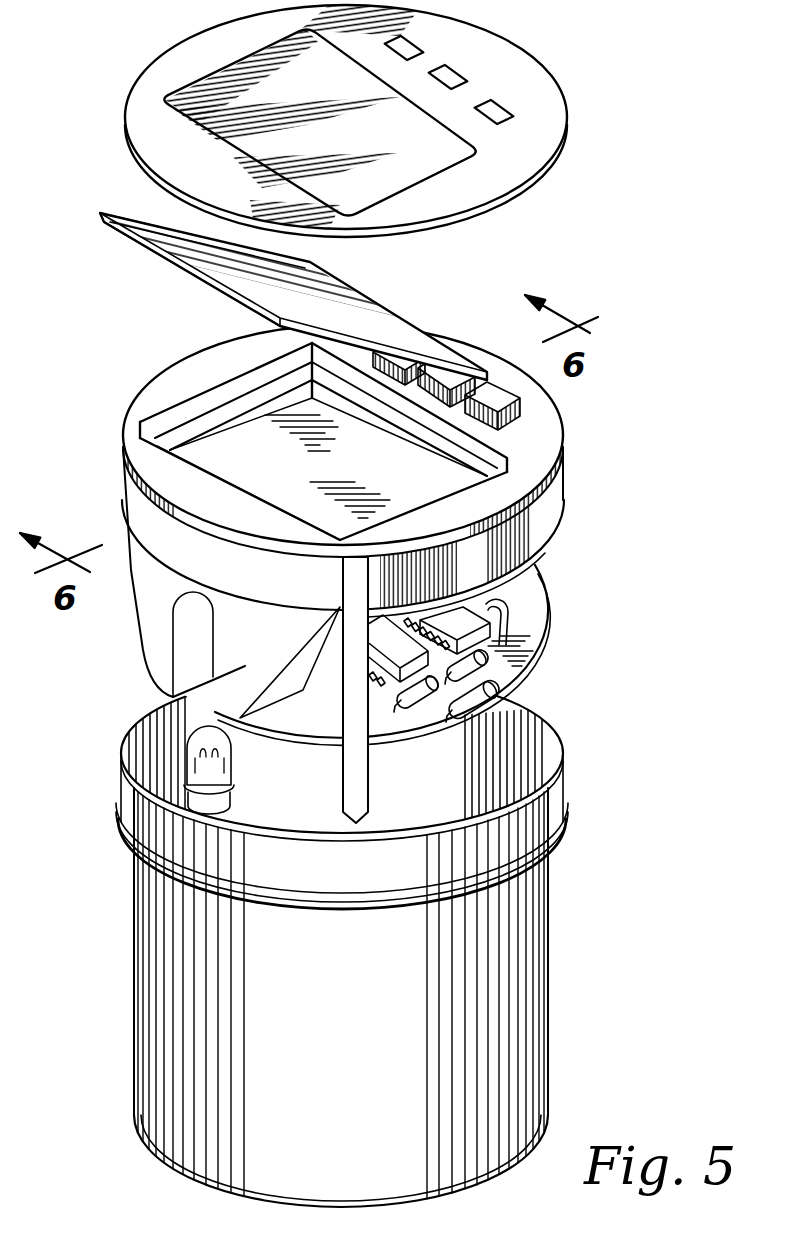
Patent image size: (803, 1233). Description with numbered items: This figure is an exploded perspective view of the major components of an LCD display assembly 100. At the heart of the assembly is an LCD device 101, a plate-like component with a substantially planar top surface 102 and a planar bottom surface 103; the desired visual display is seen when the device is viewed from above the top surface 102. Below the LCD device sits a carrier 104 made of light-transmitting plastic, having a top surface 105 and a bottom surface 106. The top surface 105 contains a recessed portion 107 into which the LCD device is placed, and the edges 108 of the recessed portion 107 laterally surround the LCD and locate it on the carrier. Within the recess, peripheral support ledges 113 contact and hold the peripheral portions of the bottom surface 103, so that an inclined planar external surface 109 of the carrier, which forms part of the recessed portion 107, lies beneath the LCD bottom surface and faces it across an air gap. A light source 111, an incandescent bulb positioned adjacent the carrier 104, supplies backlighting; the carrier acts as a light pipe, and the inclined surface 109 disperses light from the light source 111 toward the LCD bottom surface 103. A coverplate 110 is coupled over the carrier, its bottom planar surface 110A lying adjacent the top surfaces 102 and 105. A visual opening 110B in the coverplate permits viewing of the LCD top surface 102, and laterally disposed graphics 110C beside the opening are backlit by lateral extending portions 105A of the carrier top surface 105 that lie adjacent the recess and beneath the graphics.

The LCD display assembly 100 is at (633, 670).
The LCD device 101 is at (143, 238).
The top surface 102 is at (150, 213).
The bottom surface 103 is at (188, 270).
The carrier 104 is at (540, 498).
The top surface 105 is at (533, 474).
The lateral extending portions 105A is at (487, 440).
The bottom surface 106 is at (522, 558).
The top surface recessed portion 107 is at (172, 417).
The edges 108 is at (197, 452).
The inclined planar external surface 109 is at (190, 450).
The coverplate 110 is at (165, 64).
The bottom planar surface 110A is at (497, 207).
The visual opening 110B is at (160, 99).
The graphics 110C is at (503, 133).
The light source 111 is at (188, 742).
The peripheral support ledges 113 is at (228, 424).